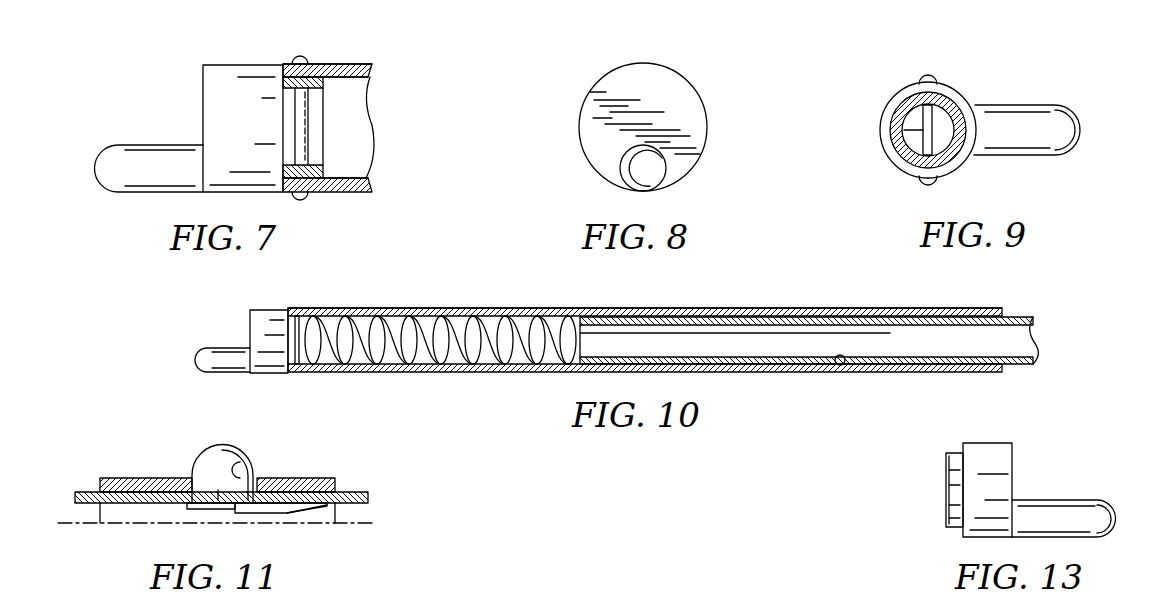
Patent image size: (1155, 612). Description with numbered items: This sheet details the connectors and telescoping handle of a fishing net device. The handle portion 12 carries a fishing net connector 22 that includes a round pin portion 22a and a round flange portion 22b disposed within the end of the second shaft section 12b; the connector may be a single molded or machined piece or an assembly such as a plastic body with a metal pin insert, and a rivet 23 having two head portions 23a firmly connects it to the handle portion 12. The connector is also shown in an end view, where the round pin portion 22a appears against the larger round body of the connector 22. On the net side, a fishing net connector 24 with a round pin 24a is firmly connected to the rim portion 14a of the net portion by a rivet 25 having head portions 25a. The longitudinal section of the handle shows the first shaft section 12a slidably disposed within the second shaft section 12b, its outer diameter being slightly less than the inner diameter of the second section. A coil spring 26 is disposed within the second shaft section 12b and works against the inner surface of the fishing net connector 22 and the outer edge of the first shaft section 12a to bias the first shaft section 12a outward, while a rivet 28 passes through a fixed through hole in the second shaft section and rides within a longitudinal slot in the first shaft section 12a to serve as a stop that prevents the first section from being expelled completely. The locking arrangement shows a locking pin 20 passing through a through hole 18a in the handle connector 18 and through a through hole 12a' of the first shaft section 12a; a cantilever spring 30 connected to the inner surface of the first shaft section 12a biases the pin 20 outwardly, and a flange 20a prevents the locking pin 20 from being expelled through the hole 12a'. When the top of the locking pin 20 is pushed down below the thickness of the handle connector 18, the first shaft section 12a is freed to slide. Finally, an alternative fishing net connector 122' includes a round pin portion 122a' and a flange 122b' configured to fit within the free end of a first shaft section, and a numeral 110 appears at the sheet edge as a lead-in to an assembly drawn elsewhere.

In FIG. 7, the handle portion 12 is at (350, 200).
In FIG. 10, the handle portion 12 is at (540, 302).
In FIG. 10, the first shaft section 12a is at (832, 320).
In FIG. 11, the first shaft section 12a is at (209, 465).
In FIG. 11, the through hole 12a' is at (268, 531).
In FIG. 7, the second shaft section 12b is at (350, 64).
In FIG. 10, the second shaft section 12b is at (800, 308).
In FIG. 9, the rim portion 14a is at (967, 93).
In FIG. 11, the handle connector 18 is at (310, 478).
In FIG. 11, the through hole 18a is at (247, 468).
In FIG. 11, the locking pin 20 is at (225, 444).
In FIG. 11, the flange 20a is at (190, 509).
In FIG. 7, the fishing net connector 22 is at (222, 120).
In FIG. 8, the fishing net connector 22 is at (677, 90).
In FIG. 10, the fishing net connector 22 is at (262, 330).
In FIG. 7, the round pin portion 22a is at (130, 152).
In FIG. 8, the round pin portion 22a is at (635, 165).
In FIG. 10, the round pin portion 22a is at (210, 358).
In FIG. 7, the round flange portion 22b is at (335, 100).
In FIG. 7, the rivet 23 is at (303, 130).
In FIG. 7, the head portions 23a is at (305, 62).
In FIG. 9, the fishing net connector 24 is at (900, 98).
In FIG. 9, the round pin 24a is at (1065, 120).
In FIG. 9, the rivet 25 is at (923, 130).
In FIG. 9, the head portions 25a is at (935, 80).
In FIG. 10, the coil spring 26 is at (420, 335).
In FIG. 10, the rivet 28 is at (838, 366).
In FIG. 11, the cantilever spring 30 is at (290, 512).
In FIG. 11, the handle assembly 110 is at (432, 611).
In FIG. 13, the fishing net connector 122' is at (1032, 474).
In FIG. 13, the round pin portion 122a' is at (1081, 489).
In FIG. 13, the flange 122b' is at (914, 489).